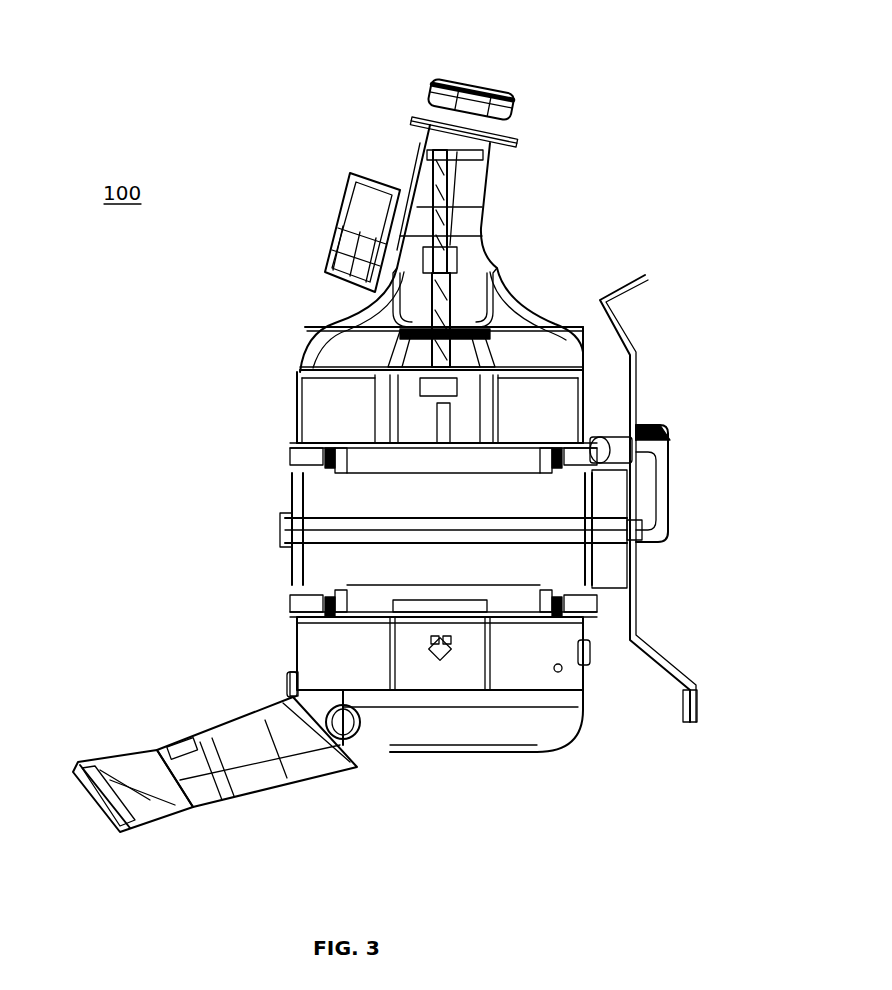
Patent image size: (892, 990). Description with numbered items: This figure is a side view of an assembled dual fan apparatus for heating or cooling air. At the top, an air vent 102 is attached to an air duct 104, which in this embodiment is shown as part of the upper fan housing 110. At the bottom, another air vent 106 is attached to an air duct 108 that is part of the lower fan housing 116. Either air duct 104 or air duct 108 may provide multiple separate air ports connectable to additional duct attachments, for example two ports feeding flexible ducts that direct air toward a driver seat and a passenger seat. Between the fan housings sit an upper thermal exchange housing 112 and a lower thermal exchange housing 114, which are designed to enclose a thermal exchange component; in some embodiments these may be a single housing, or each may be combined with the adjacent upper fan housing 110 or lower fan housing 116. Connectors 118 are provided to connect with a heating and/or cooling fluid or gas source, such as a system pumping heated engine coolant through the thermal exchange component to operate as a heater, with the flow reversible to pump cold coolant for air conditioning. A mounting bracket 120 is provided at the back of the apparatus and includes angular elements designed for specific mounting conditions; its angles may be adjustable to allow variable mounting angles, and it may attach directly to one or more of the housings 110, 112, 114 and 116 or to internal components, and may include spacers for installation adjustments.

The air vent 102 is at (463, 66).
The air duct 104 is at (500, 174).
The air vent 106 is at (122, 835).
The air duct 108 is at (210, 816).
The upper fan housing 110 is at (282, 397).
The upper thermal exchange housing 112 is at (276, 490).
The lower thermal exchange housing 114 is at (278, 566).
The lower fan housing 116 is at (601, 691).
The connectors 118 is at (680, 420).
The mounting bracket 120 is at (634, 339).